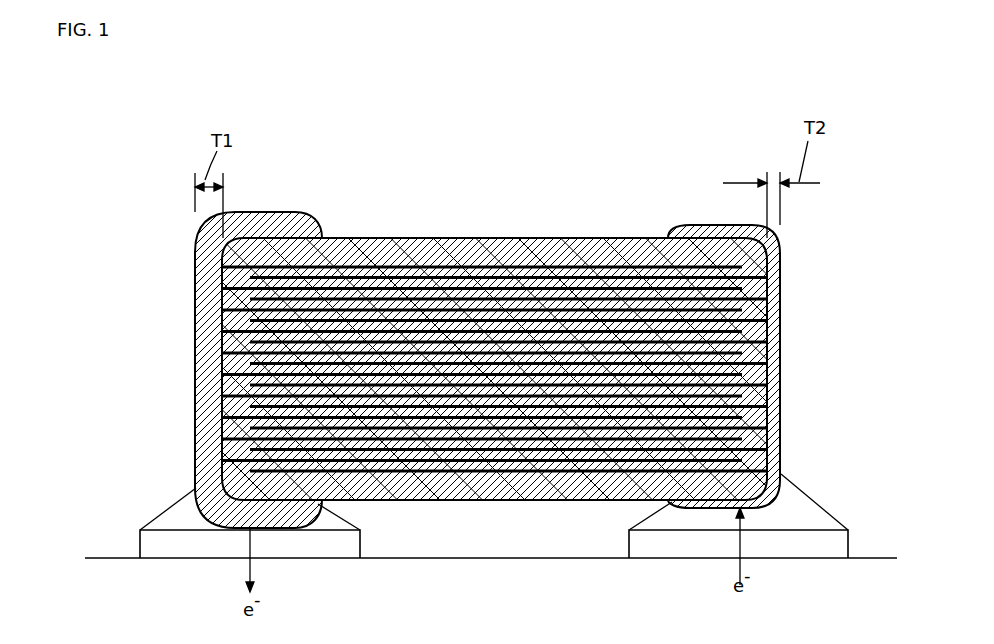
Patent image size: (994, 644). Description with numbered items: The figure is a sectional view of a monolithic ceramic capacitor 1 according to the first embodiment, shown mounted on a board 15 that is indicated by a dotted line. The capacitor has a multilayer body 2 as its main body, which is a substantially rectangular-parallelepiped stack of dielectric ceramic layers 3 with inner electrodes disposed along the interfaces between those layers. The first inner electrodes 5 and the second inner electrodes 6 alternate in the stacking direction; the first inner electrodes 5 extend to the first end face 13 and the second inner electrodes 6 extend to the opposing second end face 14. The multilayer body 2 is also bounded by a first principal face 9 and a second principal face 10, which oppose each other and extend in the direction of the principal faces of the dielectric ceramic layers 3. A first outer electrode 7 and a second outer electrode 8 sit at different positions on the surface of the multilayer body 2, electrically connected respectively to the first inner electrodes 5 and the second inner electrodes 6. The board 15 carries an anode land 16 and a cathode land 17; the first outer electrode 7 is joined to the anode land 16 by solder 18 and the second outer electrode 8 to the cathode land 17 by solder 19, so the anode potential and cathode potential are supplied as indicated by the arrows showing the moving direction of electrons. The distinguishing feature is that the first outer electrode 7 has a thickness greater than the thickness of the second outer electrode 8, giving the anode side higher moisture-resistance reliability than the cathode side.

The monolithic ceramic capacitor 1 is at (360, 150).
The multilayer body 2 is at (608, 234).
The dielectric ceramic layers 3 is at (404, 450).
The first inner electrodes 5 is at (432, 290).
The second inner electrodes 6 is at (590, 447).
The first outer electrode 7 is at (195, 405).
The second outer electrode 8 is at (780, 395).
The first principal face 9 is at (487, 238).
The second principal face 10 is at (487, 500).
The first end face 13 is at (220, 363).
The second end face 14 is at (780, 342).
The board 15 is at (105, 556).
The anode land 16 is at (177, 550).
The cathode land 17 is at (808, 540).
The solder 18 is at (170, 508).
The solder 19 is at (838, 524).